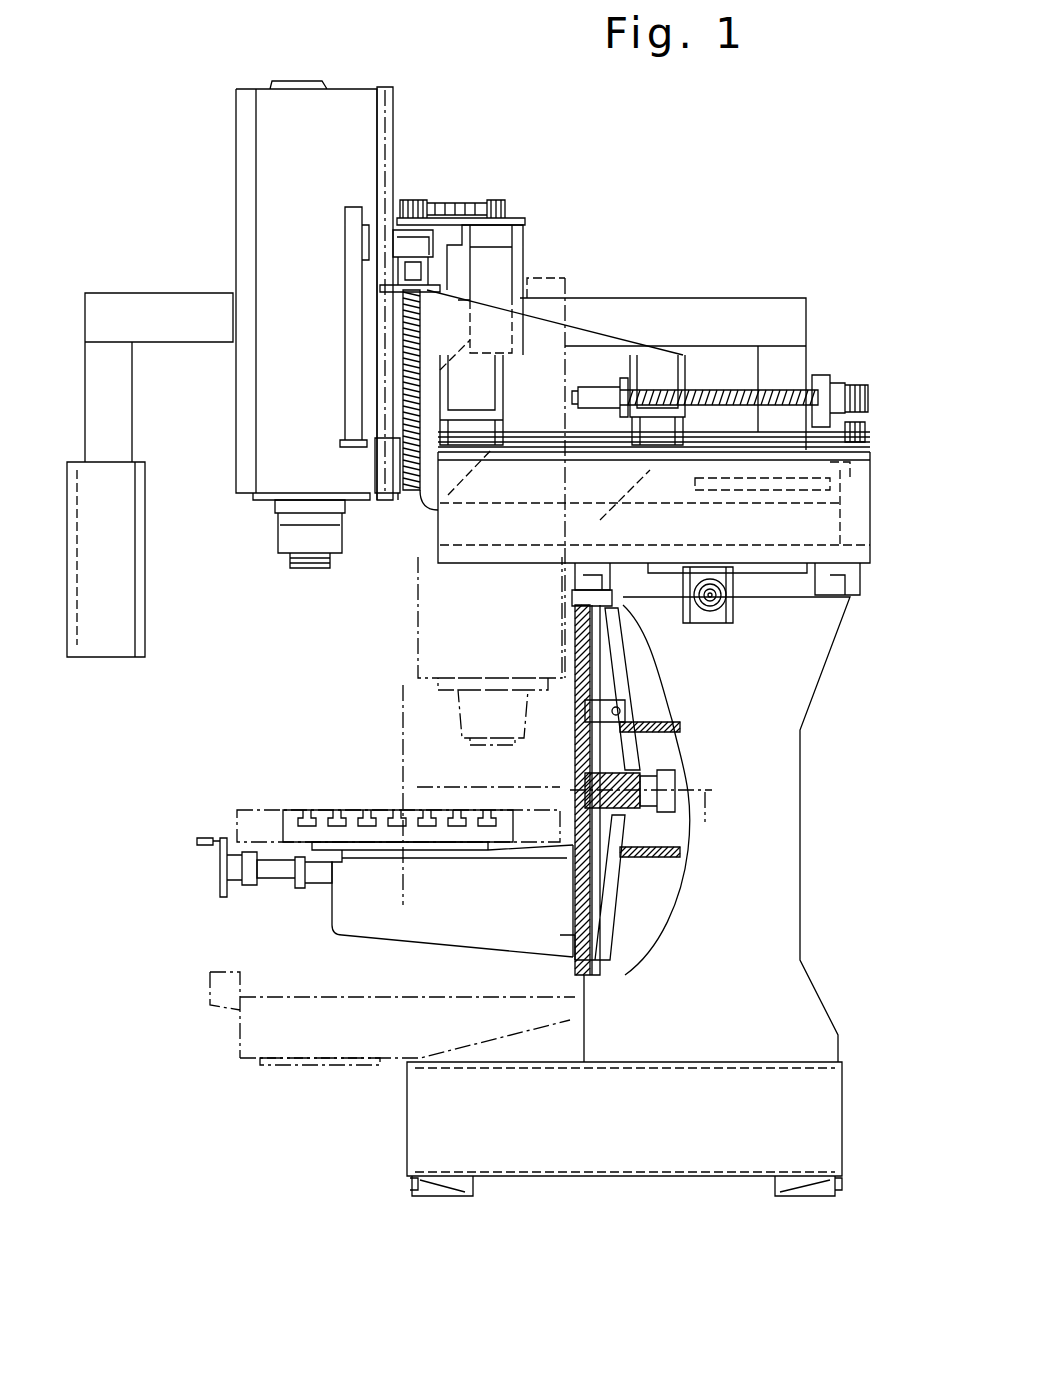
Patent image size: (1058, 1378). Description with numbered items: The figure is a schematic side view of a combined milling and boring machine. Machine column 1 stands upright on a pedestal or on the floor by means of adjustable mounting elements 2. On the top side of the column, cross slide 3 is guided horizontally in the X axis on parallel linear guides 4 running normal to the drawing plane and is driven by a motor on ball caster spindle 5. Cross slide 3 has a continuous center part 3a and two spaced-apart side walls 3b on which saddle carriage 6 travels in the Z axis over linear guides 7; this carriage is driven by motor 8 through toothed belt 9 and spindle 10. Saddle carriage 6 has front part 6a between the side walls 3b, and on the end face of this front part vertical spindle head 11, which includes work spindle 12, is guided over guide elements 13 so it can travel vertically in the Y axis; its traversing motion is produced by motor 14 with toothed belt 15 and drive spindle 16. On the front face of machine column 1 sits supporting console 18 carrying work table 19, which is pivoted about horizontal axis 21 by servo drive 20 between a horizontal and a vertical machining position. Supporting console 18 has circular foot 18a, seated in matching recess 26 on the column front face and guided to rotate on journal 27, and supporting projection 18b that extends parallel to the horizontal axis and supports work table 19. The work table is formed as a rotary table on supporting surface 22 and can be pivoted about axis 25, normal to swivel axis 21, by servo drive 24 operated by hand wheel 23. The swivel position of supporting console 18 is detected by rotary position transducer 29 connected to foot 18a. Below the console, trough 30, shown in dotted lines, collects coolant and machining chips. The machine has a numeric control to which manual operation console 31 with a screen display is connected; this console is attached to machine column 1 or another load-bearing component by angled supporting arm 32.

The machine column 1 is at (770, 948).
The adjustable mounting elements 2 is at (418, 1190).
The cross slide 3 is at (592, 518).
The continuous center part 3a is at (760, 548).
The side walls 3b is at (468, 512).
The parallel linear guides 4 is at (585, 600).
The ball caster spindle 5 is at (712, 598).
The saddle carriage 6 is at (595, 337).
The front part 6a is at (437, 338).
The linear guides 7 is at (700, 390).
The motor 8 is at (807, 488).
The toothed belt 9 is at (873, 422).
The spindle 10 is at (772, 390).
The vertical spindle head 11 is at (275, 128).
The work spindle 12 is at (297, 537).
The guide elements 13 is at (392, 310).
The motor 14 is at (497, 255).
The toothed belt 15 is at (448, 205).
The drive spindle 16 is at (412, 268).
The supporting console 18 is at (403, 958).
The circular foot 18a is at (570, 950).
The supporting projection 18b is at (377, 903).
The work table 19 is at (295, 812).
The servo drive 20 is at (625, 712).
The horizontal axis 21 is at (707, 822).
The supporting surface 22 is at (353, 845).
The hand wheel 23 is at (220, 870).
The servo drive 24 is at (277, 873).
The axis 25 is at (402, 713).
The matching recess 26 is at (648, 936).
The journal 27 is at (642, 758).
The rotary position transducer 29 is at (667, 780).
The trough 30 is at (242, 1037).
The manual operation console 31 is at (113, 638).
The angled supporting arm 32 is at (123, 303).